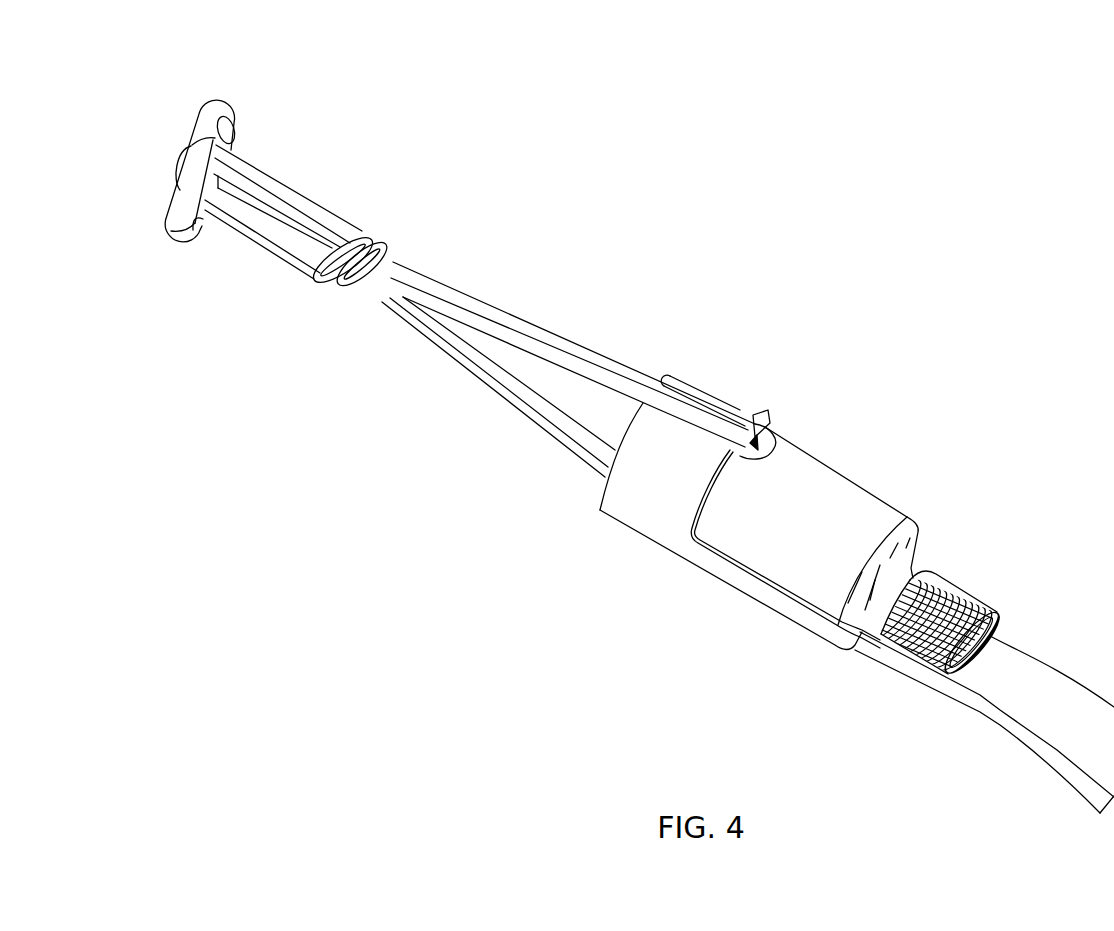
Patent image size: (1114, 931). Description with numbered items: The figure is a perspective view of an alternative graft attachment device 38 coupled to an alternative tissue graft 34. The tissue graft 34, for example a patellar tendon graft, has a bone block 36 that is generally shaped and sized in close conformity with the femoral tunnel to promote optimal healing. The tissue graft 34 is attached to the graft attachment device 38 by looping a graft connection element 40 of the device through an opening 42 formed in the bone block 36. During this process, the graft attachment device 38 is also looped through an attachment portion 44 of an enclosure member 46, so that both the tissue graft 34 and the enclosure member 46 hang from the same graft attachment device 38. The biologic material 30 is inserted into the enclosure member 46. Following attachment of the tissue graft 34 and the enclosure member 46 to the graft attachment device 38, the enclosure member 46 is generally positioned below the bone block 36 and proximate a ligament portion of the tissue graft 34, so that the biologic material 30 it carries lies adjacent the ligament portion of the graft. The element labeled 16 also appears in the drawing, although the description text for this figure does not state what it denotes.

The loop handle 16 is at (219, 112).
The biologic material 30 is at (928, 655).
The tissue graft 34 is at (1067, 681).
The bone block 36 is at (850, 489).
The graft attachment device 38 is at (511, 123).
The graft connection element 40 is at (491, 319).
The opening 42 is at (769, 428).
The attachment portion 44 is at (767, 416).
The enclosure member 46 is at (980, 598).